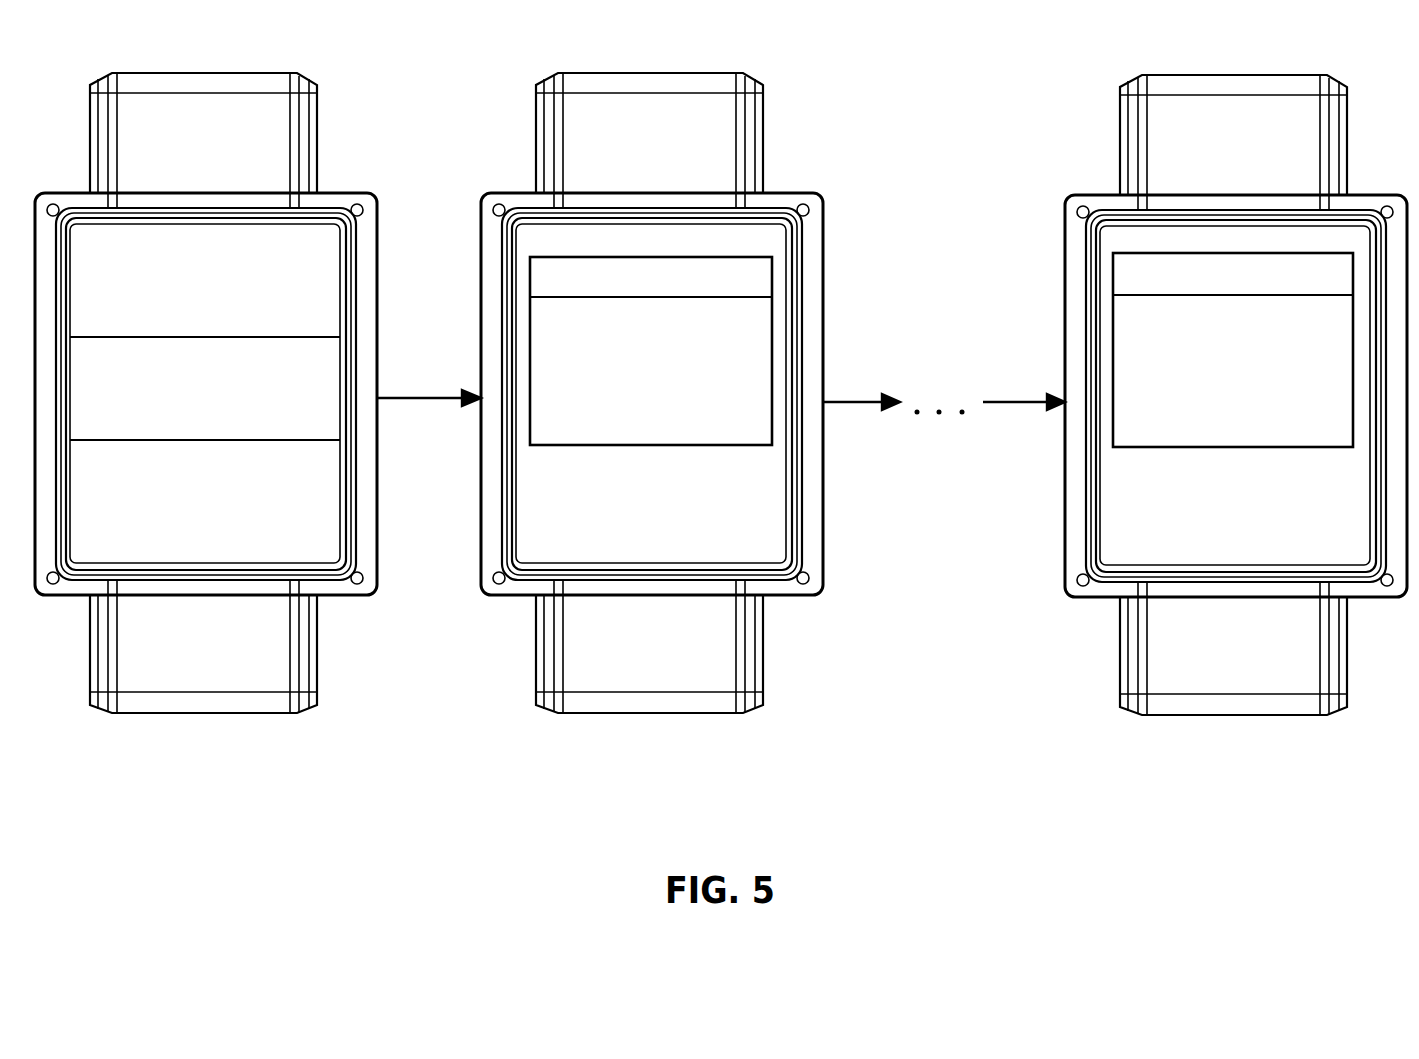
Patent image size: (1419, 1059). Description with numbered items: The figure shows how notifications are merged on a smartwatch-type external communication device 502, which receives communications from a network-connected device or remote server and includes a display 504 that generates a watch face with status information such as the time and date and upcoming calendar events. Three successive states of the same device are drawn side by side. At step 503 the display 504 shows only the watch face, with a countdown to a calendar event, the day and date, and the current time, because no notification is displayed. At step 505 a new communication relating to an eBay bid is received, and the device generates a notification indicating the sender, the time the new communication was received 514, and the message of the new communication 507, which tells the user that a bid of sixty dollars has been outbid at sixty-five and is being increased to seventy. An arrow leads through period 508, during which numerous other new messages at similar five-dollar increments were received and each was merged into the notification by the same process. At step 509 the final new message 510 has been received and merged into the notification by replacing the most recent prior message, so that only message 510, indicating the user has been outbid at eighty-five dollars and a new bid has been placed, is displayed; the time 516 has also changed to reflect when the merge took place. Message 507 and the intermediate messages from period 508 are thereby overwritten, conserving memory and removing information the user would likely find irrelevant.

The external communication device 502 is at (373, 201).
The step 503 is at (229, 362).
The display 504 is at (230, 217).
The step 505 is at (686, 364).
The message of the new communication 507 is at (760, 366).
The period 508 is at (940, 390).
The step 509 is at (1205, 371).
The new message 510 is at (1120, 370).
The time the new communication was received 514 is at (706, 268).
The time 516 is at (1285, 258).